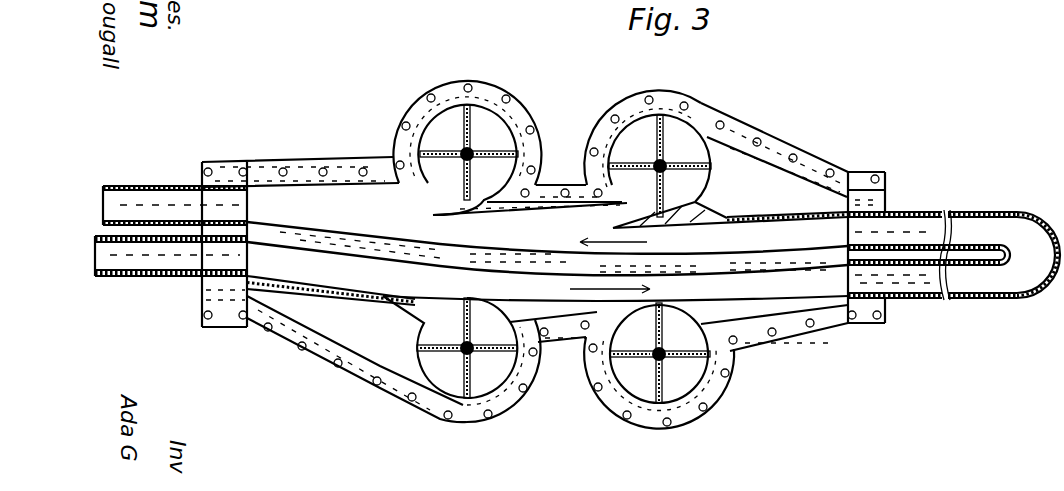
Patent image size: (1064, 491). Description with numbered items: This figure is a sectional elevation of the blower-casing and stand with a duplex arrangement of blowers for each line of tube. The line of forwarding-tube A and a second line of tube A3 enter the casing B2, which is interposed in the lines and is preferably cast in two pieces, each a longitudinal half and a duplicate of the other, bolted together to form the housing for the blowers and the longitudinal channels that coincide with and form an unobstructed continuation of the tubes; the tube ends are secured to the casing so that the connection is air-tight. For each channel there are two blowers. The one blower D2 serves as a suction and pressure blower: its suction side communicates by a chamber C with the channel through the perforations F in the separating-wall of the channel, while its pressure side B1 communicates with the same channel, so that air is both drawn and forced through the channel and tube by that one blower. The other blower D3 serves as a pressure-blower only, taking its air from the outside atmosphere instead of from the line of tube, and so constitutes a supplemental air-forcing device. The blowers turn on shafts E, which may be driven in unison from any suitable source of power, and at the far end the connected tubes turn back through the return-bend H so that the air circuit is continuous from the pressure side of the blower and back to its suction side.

The forwarding-tube A is at (560, 231).
The inner pipe A3 is at (552, 270).
The pressure side of the blower B1 is at (294, 230).
The blower-casing B2 is at (653, 403).
The chamber C is at (547, 262).
The blower D2 is at (469, 400).
The blower D3 is at (660, 400).
The shaft E is at (663, 358).
The perforations F is at (325, 296).
The return bend H is at (1038, 249).